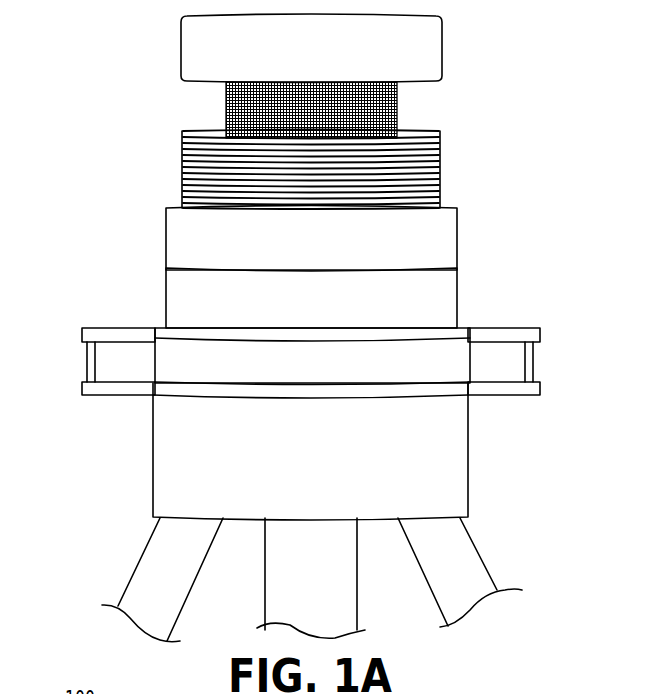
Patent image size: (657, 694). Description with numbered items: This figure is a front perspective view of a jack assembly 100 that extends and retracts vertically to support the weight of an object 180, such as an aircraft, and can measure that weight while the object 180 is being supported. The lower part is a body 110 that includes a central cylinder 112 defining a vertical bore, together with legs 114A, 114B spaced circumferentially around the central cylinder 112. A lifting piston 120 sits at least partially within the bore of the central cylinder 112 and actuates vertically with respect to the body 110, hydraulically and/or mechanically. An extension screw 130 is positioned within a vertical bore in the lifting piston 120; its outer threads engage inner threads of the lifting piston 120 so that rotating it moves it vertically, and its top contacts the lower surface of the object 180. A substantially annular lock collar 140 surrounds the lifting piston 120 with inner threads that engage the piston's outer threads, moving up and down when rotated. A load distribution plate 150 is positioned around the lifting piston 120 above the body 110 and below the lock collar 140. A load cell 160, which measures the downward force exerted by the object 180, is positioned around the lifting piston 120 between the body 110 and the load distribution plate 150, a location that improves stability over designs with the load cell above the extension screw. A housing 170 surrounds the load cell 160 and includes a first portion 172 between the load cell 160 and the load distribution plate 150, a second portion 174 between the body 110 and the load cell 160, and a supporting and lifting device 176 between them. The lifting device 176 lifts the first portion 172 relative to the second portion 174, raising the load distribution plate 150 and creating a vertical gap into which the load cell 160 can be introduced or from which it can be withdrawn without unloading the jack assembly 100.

The jack assembly 100 is at (78, 56).
The body 110 is at (470, 437).
The central cylinder 112 is at (263, 565).
The leg 114A is at (143, 553).
The leg 114B is at (478, 550).
The lifting piston 120 is at (442, 165).
The extension screw 130 is at (398, 110).
The lock collar 140 is at (458, 233).
The load distribution plate 150 is at (458, 297).
The load cell 160 is at (458, 370).
The housing 170 is at (349, 353).
The first portion 172 is at (485, 326).
The second portion 174 is at (523, 395).
The supporting and lifting device 176 is at (535, 363).
The object 180 is at (443, 42).